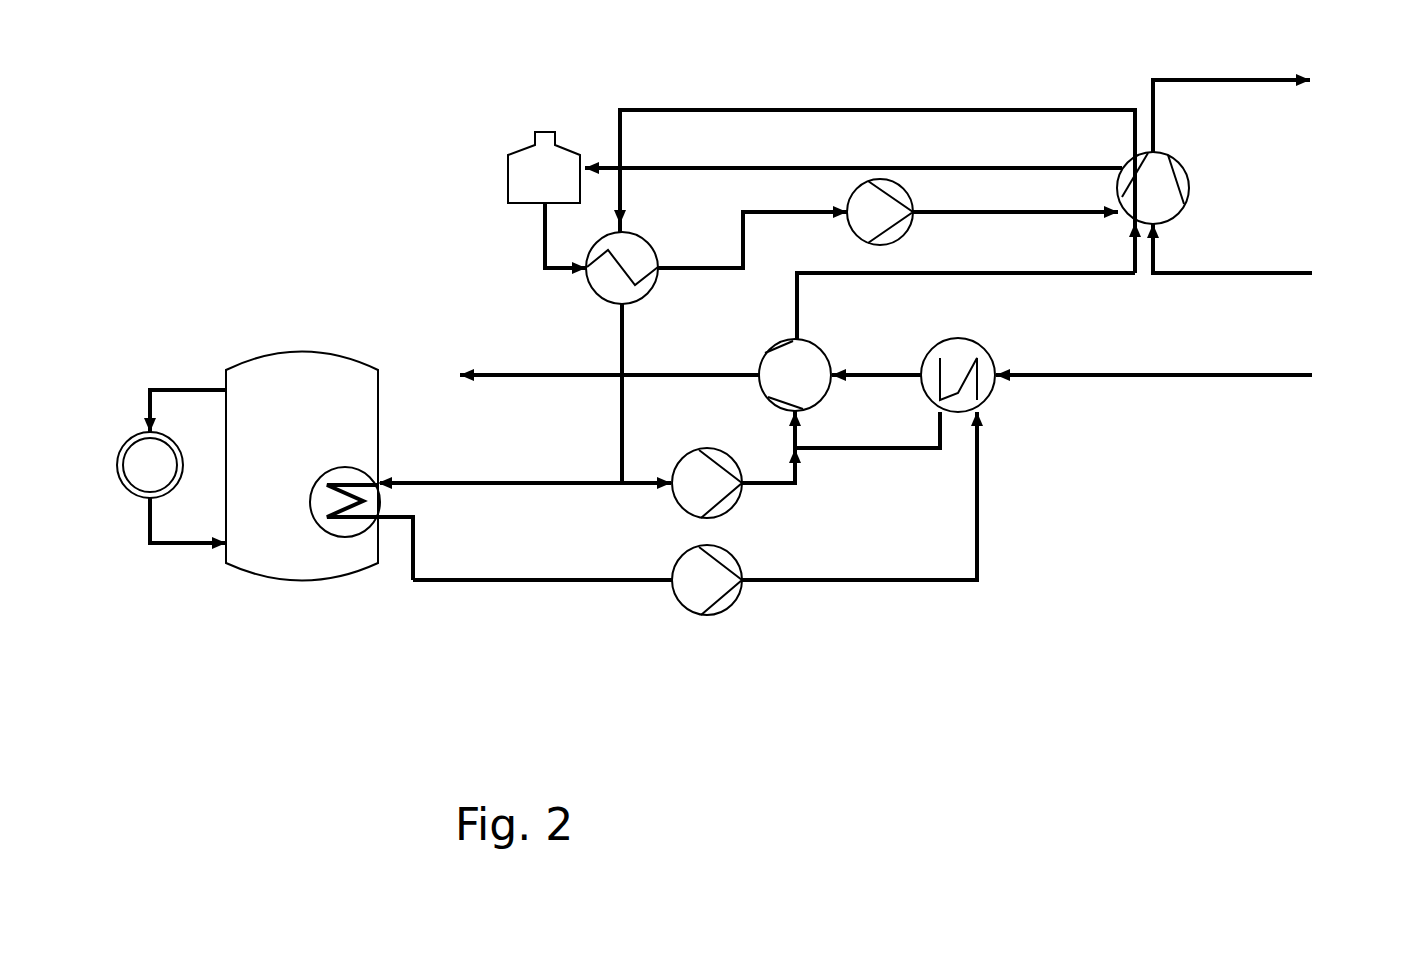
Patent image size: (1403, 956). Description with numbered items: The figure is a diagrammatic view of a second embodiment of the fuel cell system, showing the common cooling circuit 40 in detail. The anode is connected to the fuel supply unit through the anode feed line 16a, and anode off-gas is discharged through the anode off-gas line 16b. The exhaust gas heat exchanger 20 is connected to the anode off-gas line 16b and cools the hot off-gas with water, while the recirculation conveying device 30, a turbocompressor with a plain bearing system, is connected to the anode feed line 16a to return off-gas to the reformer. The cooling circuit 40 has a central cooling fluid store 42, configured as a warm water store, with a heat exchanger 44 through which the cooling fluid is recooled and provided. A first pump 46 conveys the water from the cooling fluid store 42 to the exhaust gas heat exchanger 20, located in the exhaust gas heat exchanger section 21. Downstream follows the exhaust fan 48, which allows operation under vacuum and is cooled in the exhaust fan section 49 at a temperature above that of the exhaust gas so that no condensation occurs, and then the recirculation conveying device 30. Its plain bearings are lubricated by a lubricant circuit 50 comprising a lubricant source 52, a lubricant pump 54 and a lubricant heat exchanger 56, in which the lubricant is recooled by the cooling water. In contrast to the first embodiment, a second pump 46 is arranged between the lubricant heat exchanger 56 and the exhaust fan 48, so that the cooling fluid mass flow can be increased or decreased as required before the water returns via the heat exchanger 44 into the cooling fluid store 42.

The anode feed line 16a is at (1312, 270).
The anode off-gas line 16b is at (640, 372).
The exhaust gas heat exchanger 20 is at (1002, 415).
The exhaust gas heat exchanger section 21 is at (985, 403).
The recirculation conveying device 30 is at (1190, 165).
The cooling circuit 40 is at (883, 582).
The cooling fluid store 42 is at (287, 580).
The heat exchanger 44 is at (350, 467).
The pump 46 is at (740, 495).
The exhaust fan 48 is at (737, 392).
The exhaust fan section 49 is at (765, 402).
The lubricant circuit 50 is at (980, 168).
The lubricant source 52 is at (517, 150).
The lubricant pump 54 is at (870, 178).
The lubricant heat exchanger 56 is at (597, 292).